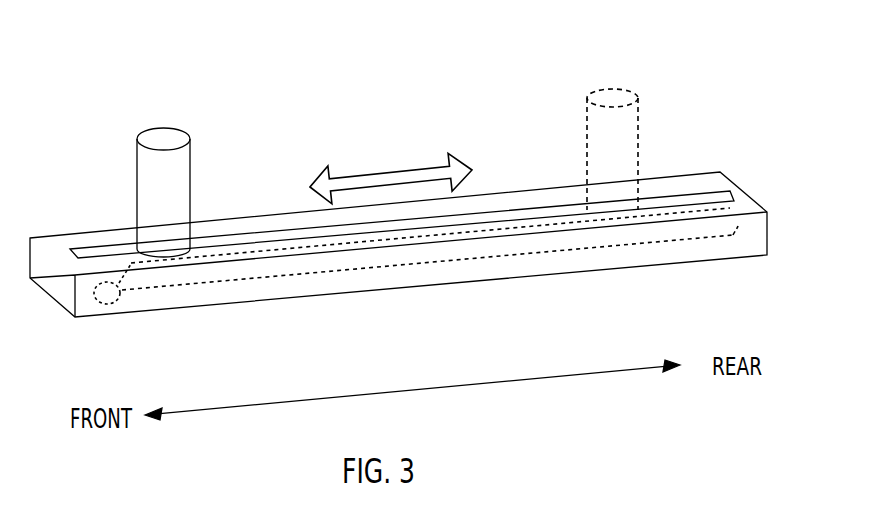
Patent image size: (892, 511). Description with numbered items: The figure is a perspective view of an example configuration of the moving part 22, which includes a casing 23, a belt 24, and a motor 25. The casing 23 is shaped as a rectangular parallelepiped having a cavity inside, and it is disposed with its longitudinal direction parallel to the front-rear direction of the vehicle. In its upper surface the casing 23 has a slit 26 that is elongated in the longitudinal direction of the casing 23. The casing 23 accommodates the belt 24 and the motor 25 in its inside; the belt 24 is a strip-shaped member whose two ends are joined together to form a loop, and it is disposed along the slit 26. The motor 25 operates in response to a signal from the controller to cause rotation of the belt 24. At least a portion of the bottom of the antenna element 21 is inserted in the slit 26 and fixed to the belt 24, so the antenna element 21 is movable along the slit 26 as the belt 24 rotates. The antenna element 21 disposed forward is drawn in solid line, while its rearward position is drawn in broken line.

The antenna element 21 is at (182, 128).
The moving part 22 is at (522, 277).
The casing 23 is at (437, 285).
The belt 24 is at (362, 268).
The motor 25 is at (107, 305).
The slit 26 is at (285, 231).